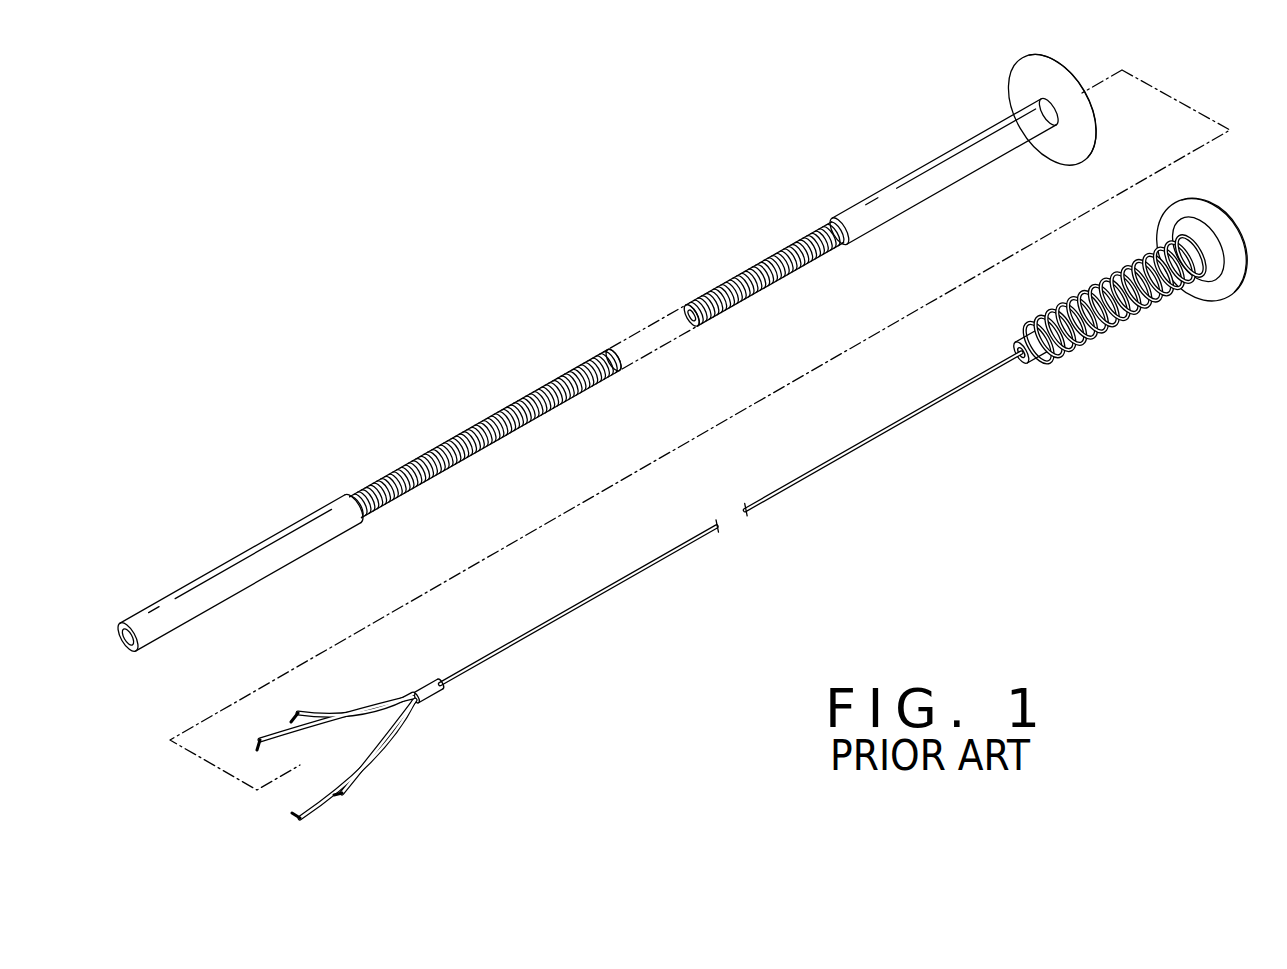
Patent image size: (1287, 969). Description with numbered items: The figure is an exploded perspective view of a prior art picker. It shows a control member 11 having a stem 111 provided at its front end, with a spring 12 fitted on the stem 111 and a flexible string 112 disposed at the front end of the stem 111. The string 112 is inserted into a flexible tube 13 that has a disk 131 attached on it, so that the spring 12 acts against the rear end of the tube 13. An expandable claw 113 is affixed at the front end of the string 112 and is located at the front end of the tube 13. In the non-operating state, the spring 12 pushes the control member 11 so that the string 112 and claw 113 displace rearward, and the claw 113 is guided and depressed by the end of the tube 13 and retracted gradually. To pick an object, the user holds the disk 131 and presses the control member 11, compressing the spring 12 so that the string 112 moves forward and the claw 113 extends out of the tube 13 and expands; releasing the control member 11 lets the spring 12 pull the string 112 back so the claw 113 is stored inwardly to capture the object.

The control member 11 is at (1227, 292).
The stem 111 is at (1040, 343).
The flexible string 112 is at (883, 438).
The expandable claw 113 is at (387, 729).
The spring 12 is at (1118, 326).
The flexible tube 13 is at (726, 283).
The disk 131 is at (1028, 88).